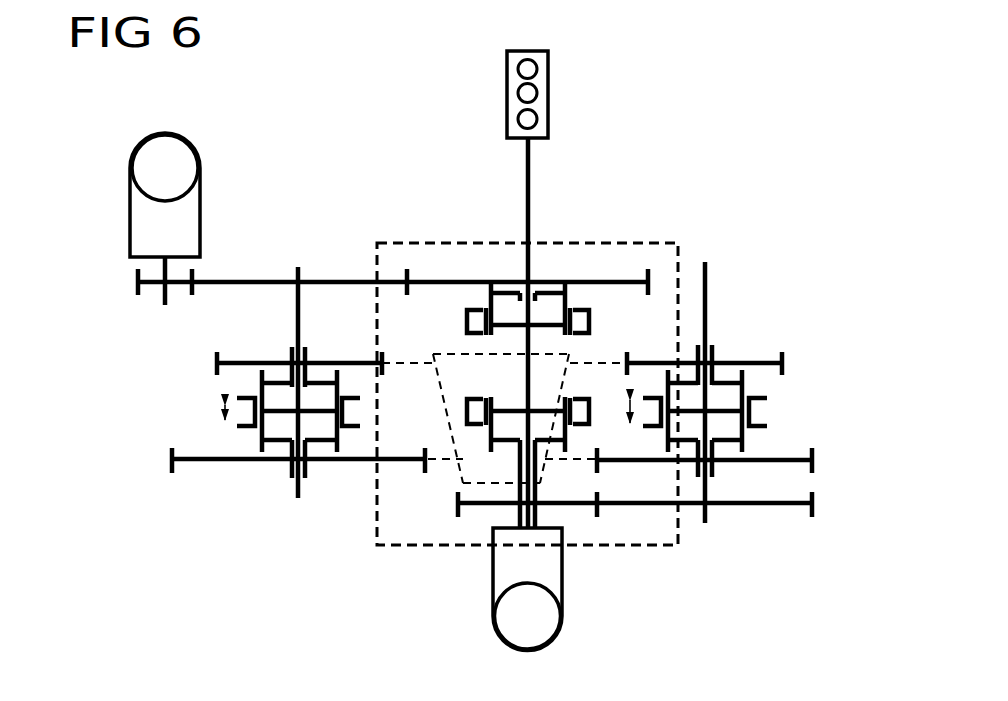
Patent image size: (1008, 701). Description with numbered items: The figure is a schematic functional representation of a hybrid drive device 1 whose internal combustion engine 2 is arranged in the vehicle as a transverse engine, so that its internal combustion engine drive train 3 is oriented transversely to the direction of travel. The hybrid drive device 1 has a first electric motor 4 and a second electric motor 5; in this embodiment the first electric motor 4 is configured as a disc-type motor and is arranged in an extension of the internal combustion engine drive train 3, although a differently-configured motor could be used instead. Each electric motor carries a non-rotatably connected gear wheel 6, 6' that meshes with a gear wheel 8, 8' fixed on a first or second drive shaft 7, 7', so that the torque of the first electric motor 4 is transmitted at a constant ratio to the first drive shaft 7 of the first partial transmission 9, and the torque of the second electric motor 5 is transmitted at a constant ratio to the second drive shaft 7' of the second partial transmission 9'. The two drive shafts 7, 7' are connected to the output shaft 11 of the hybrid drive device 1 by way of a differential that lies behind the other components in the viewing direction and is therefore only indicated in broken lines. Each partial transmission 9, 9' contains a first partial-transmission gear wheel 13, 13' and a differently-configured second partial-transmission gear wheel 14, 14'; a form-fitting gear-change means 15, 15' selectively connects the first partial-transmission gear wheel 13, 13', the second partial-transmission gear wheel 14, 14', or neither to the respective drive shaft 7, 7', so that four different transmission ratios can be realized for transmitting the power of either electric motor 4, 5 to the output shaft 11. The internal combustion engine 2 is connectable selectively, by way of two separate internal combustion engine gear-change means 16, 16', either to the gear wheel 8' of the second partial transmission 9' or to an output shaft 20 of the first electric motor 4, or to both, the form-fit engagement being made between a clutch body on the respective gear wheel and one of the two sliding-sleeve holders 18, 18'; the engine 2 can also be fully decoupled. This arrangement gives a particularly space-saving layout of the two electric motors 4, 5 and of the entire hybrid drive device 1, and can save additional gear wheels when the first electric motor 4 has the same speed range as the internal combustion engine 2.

The hybrid drive device 1 is at (766, 114).
The internal combustion engine 2 is at (549, 88).
The internal combustion engine drive train 3 is at (531, 170).
The first electric motor 4 is at (493, 583).
The second electric motor 5 is at (130, 208).
The gear wheel 6 is at (591, 517).
The gear wheel 6' is at (129, 291).
The first drive shaft 7 is at (719, 364).
The second drive shaft 7' is at (310, 345).
The gear wheel 8 is at (635, 534).
The gear wheel 8' is at (420, 242).
The first partial transmission 9 is at (747, 358).
The second partial transmission 9' is at (294, 456).
The output shaft 11 is at (505, 352).
The first partial-transmission gear wheel 13 is at (705, 335).
The first partial-transmission gear wheel 13' is at (257, 351).
The second partial-transmission gear wheel 14 is at (733, 440).
The second partial-transmission gear wheel 14' is at (279, 493).
The gear-change means 15 is at (738, 405).
The gear-change means 15' is at (162, 413).
The internal combustion engine gear-change means 16 is at (464, 492).
The internal combustion engine gear-change means 16' is at (568, 264).
The sliding-sleeve holder 18 is at (549, 501).
The sliding-sleeve holder 18' is at (536, 264).
The output shaft 20 is at (512, 517).